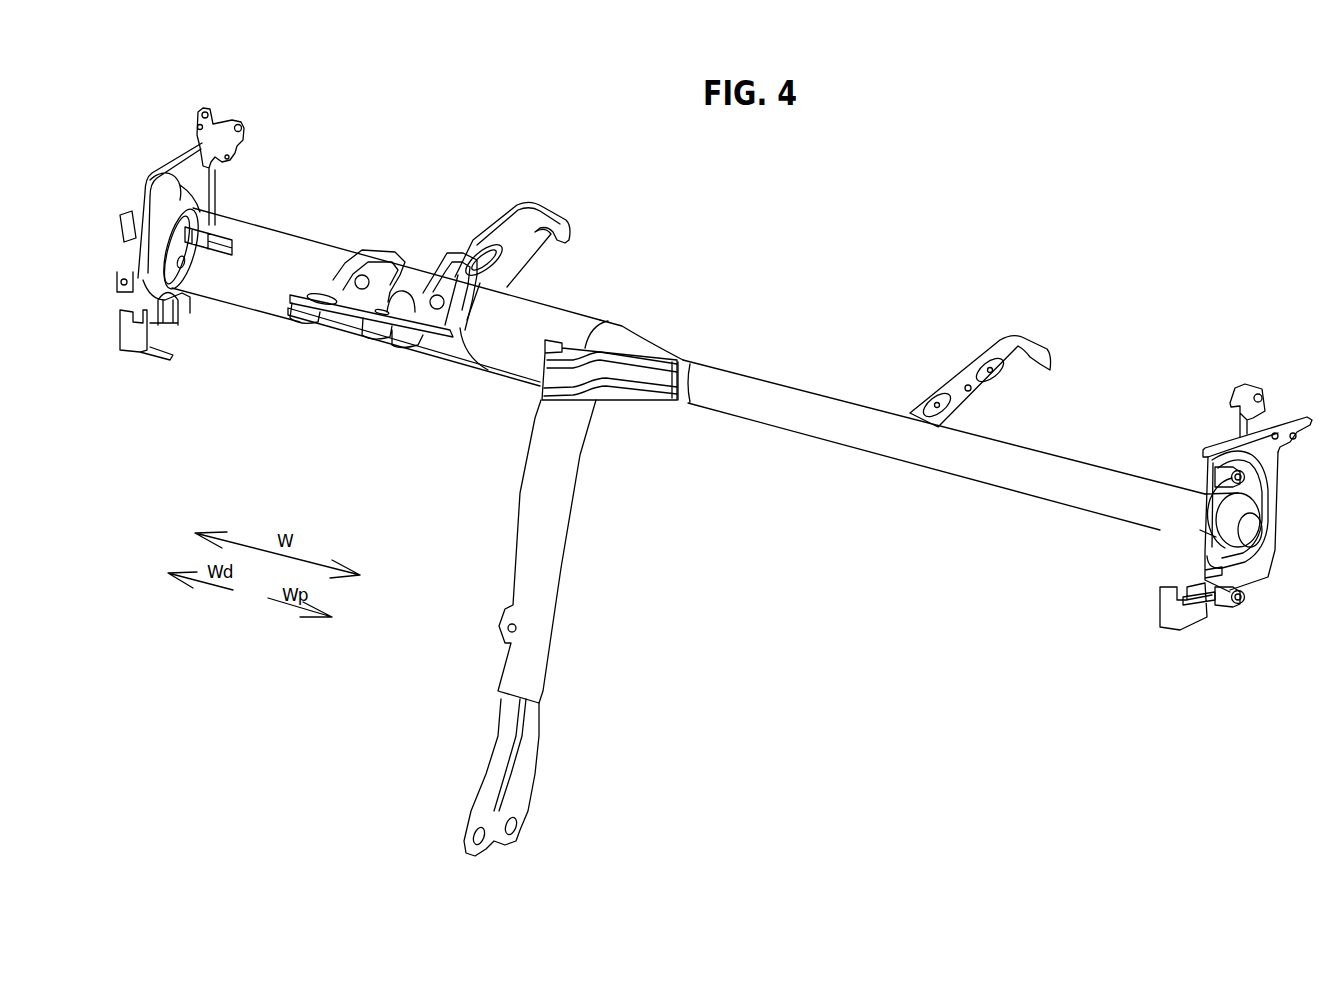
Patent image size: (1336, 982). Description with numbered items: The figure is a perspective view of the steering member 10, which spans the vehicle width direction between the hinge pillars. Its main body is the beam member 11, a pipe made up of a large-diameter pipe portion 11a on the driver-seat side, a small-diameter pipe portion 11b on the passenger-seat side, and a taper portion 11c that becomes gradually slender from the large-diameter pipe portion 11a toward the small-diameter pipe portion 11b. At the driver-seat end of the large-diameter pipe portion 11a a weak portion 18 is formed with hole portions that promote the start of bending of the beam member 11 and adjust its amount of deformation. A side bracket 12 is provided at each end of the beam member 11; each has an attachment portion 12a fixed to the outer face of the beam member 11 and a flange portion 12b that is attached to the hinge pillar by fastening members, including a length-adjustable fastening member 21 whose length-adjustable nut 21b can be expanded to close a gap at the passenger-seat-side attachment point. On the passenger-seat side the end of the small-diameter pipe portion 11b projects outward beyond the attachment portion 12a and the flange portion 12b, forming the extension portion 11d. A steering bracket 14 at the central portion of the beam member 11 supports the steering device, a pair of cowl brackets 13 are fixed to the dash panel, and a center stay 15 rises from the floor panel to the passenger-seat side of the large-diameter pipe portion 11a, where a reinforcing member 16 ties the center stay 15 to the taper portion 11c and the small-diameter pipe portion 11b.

The steering member 10 is at (1120, 273).
The beam member 11 is at (1085, 434).
The large-diameter pipe portion 11a is at (300, 238).
The small-diameter pipe portion 11b is at (783, 382).
The taper portion 11c is at (623, 333).
The extension portion 11d is at (1235, 507).
The side bracket 12 is at (145, 163).
The attachment portion 12a is at (121, 312).
The flange portion 12b is at (132, 243).
The cowl bracket 13 is at (540, 207).
The steering bracket 14 is at (420, 357).
The center stay 15 is at (531, 449).
The reinforcing member 16 is at (618, 403).
The weak portion 18 is at (220, 218).
The length-adjustable fastening member 21 is at (1196, 561).
The length-adjustable nut 21b is at (1217, 477).